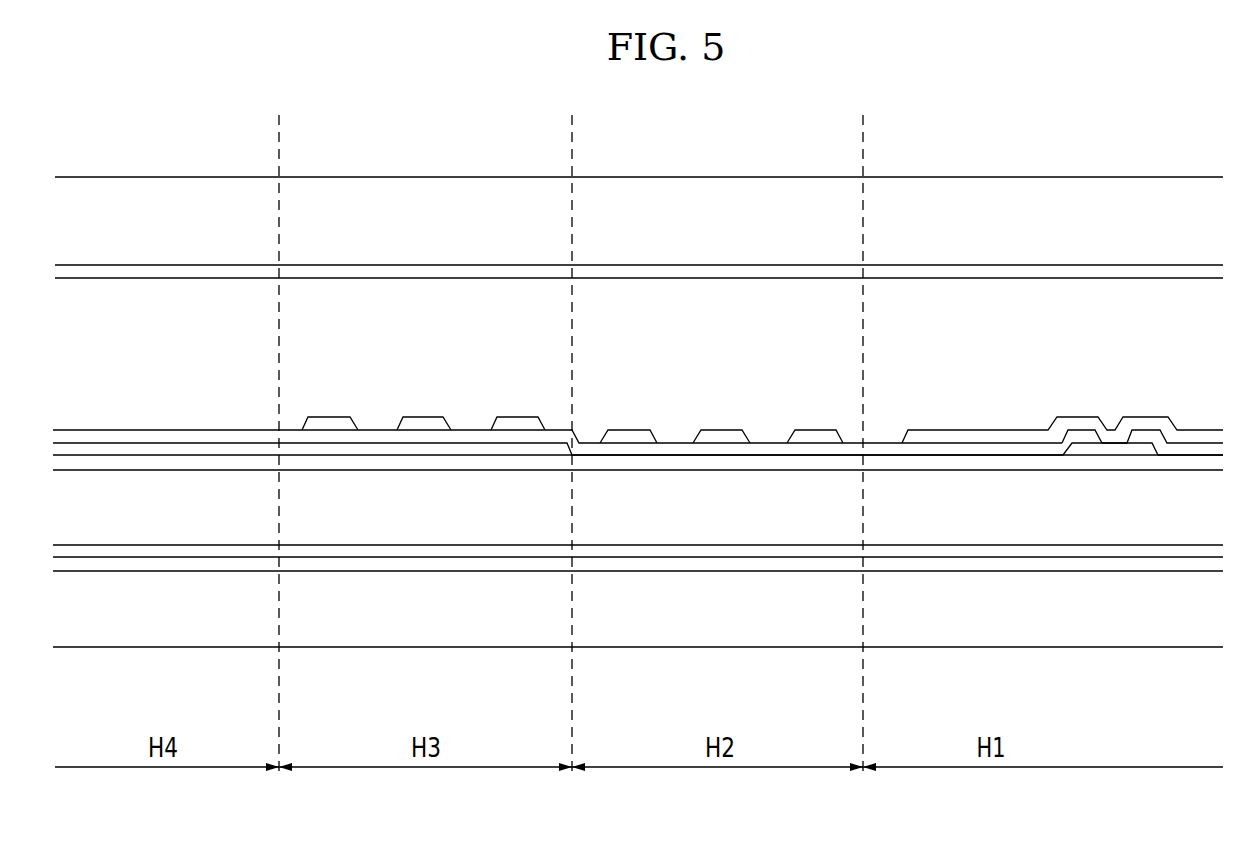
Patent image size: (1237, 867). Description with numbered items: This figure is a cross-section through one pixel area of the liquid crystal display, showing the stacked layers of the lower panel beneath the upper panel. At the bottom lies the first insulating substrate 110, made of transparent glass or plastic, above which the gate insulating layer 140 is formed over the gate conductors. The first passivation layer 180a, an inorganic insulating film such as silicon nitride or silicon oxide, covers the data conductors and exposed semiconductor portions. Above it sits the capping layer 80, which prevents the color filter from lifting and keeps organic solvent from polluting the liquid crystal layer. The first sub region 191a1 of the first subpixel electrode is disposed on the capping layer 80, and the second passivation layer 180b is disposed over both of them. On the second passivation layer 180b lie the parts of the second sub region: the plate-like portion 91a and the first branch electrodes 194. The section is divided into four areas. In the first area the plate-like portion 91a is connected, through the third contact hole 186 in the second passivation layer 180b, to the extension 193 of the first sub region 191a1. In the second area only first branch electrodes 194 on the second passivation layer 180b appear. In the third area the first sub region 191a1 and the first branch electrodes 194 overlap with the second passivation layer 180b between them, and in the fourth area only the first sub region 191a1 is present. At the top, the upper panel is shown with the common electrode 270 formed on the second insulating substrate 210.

The first insulating substrate 110 is at (233, 615).
The gate insulating layer 140 is at (177, 563).
The first passivation layer 180a is at (102, 550).
The second passivation layer 180b is at (770, 450).
The capping layer 80 is at (482, 462).
The first sub region of the first subpixel electrode 191a1 is at (332, 448).
The first branch electrodes 194 is at (429, 432).
The extension 193 is at (1090, 447).
The third contact hole 186 is at (1110, 430).
The plate-like portion 91a is at (1145, 421).
The common electrode 270 is at (783, 270).
The second insulating substrate 210 is at (948, 190).